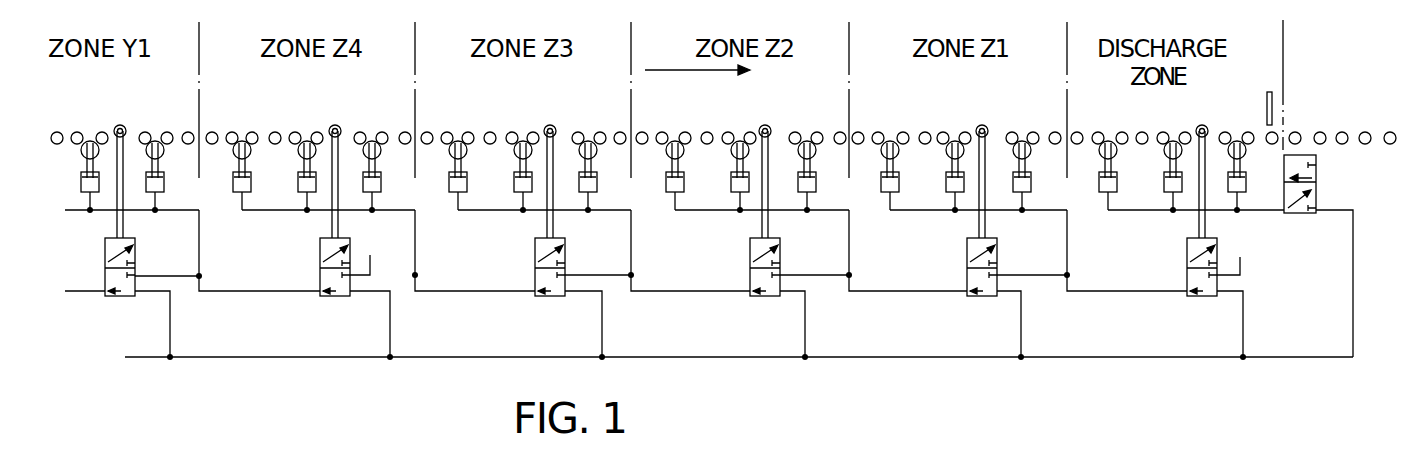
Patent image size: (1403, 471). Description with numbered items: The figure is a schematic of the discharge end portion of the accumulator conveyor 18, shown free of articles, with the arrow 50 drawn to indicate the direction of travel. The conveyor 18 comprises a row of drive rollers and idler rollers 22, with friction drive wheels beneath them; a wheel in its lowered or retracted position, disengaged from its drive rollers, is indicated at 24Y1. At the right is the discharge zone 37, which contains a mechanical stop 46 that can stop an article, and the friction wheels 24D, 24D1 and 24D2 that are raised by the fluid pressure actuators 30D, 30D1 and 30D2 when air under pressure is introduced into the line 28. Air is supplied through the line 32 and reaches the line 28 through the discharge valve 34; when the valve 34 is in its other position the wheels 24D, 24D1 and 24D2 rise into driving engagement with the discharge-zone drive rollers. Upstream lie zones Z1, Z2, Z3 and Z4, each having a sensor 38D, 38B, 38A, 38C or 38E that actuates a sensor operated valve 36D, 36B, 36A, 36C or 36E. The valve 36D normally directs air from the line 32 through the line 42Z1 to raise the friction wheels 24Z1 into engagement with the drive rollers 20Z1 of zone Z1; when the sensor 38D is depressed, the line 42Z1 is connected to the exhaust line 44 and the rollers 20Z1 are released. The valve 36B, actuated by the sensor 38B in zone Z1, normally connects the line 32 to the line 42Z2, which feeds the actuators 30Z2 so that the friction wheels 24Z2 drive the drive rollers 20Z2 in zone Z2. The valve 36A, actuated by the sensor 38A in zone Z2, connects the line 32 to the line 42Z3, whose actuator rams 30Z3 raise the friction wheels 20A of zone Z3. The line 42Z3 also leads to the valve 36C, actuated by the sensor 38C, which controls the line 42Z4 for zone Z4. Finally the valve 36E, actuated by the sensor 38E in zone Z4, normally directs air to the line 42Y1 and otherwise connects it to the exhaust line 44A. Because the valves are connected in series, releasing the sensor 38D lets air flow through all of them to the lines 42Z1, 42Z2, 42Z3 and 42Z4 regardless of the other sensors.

The accumulator conveyor 18 is at (1401, 271).
The friction wheels 20A is at (522, 140).
The drive rollers 20Z1 is at (893, 128).
The drive rollers 20Z2 is at (695, 98).
The idler rollers 22 is at (841, 131).
The friction drive wheel in lowered position 24Y1 is at (162, 153).
The friction wheels 24Z1 is at (887, 152).
The friction wheels 24Z2 is at (733, 154).
The friction wheel 24D is at (1110, 140).
The friction wheel 24D1 is at (1180, 112).
The friction wheel 24D2 is at (1247, 150).
The line 28 is at (1118, 210).
The fluid pressure actuator 30D is at (1100, 190).
The fluid pressure actuator 30D1 is at (1163, 185).
The fluid pressure actuator 30D2 is at (1243, 180).
The actuators 30Z2 is at (665, 178).
The fluid pressure actuators 30Z3 is at (513, 178).
The air supply line 32 is at (1130, 357).
The discharge valve 34 is at (1316, 182).
The sensor operated valve 36A is at (780, 252).
The sensor operated valve 36B is at (996, 250).
The sensor operated valve 36C is at (565, 250).
The sensor operated valve 36D is at (1217, 245).
The sensor operated valve 36E is at (319, 246).
The discharge zone 37 is at (1245, 40).
The sensor 38A is at (764, 126).
The sensor 38B is at (983, 126).
The sensor 38C is at (549, 126).
The sensor 38D is at (1203, 126).
The sensor 38E is at (336, 126).
The line 42Y1 is at (220, 291).
The line 42Z1 is at (1090, 291).
The line 42Z2 is at (870, 291).
The line 42Z3 is at (648, 291).
The line 42Z4 is at (432, 291).
The exhaust line 44 is at (1242, 262).
The exhaust line 44A is at (369, 258).
The mechanical stop 46 is at (1283, 108).
The direction of travel arrow 50 is at (688, 68).